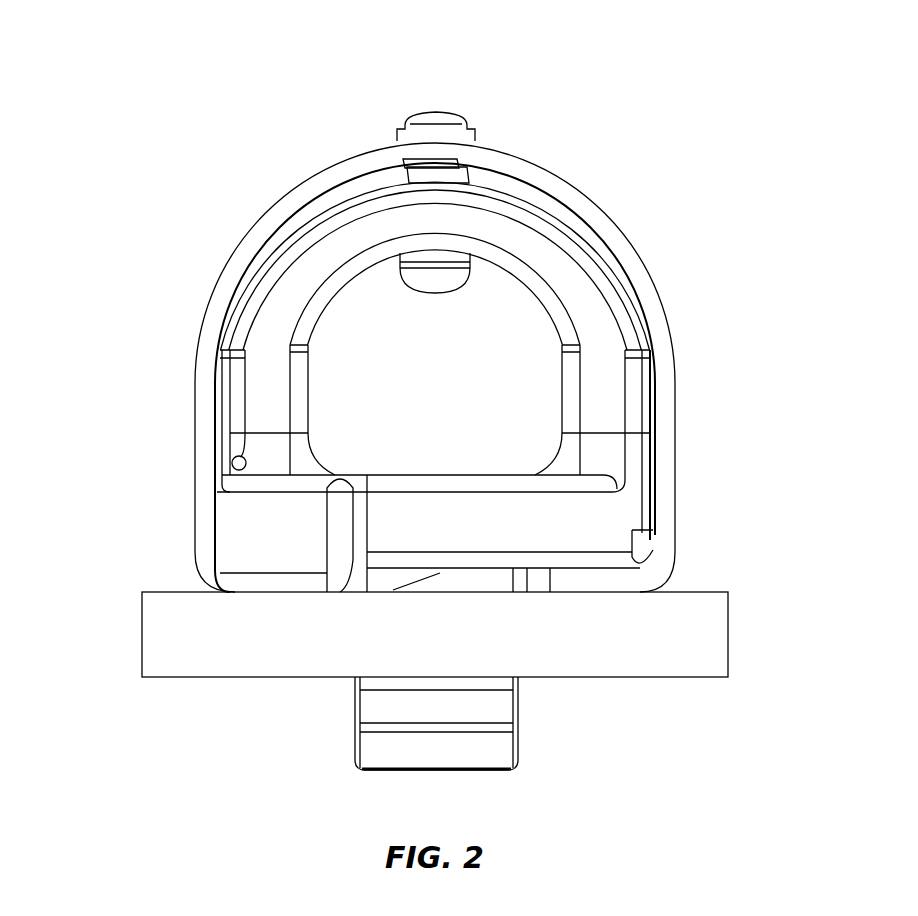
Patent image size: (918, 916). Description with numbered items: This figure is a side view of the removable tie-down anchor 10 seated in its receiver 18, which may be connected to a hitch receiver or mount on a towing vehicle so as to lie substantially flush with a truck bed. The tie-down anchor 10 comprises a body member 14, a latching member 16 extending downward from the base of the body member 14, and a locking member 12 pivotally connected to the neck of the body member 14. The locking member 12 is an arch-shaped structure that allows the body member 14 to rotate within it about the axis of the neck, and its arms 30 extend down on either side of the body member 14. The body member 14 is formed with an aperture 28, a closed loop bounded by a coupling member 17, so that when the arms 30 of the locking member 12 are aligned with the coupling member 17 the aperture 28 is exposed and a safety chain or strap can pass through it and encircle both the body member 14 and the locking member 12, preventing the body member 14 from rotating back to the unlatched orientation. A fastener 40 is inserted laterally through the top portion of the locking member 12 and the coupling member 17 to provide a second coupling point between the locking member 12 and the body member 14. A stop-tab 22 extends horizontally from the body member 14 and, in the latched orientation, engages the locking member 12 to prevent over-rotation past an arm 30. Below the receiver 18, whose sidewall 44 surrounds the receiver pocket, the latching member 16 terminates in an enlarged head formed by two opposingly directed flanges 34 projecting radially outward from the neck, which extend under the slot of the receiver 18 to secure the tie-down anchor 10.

The tie-down anchor 10 is at (298, 62).
The locking member 12 is at (225, 232).
The body member 14 is at (500, 179).
The latching member 16 is at (410, 752).
The coupling member 17 is at (350, 238).
The receiver 18 is at (378, 614).
The stop-tab 22 is at (255, 532).
The aperture 28 is at (470, 383).
The arms 30 is at (203, 397).
The flanges 34 is at (373, 707).
The fastener 40 is at (428, 112).
The sidewall 44 is at (165, 645).